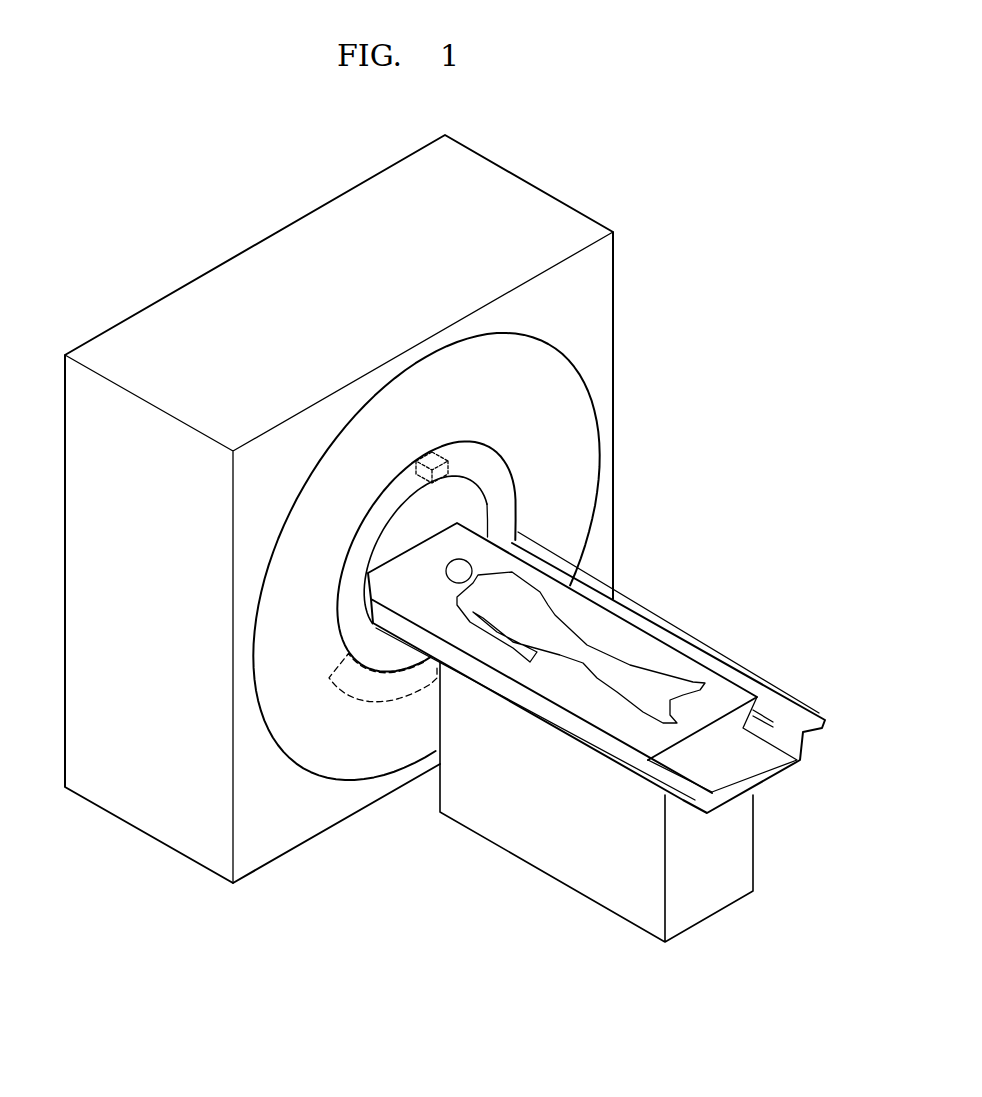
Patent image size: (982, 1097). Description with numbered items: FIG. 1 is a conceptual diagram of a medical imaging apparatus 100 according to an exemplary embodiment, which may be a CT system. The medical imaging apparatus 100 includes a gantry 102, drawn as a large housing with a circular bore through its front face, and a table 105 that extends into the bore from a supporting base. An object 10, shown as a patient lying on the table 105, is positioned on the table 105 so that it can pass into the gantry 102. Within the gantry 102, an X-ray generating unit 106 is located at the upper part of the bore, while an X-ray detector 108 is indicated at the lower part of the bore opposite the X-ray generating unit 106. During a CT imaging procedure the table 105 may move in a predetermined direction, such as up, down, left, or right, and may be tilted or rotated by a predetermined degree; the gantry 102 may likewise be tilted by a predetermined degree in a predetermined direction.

The medical imaging apparatus 100 is at (699, 190).
The gantry 102 is at (596, 369).
The X-ray generating unit 106 is at (448, 465).
The X-ray detector 108 is at (357, 697).
The table 105 is at (533, 840).
The object 10 is at (540, 610).